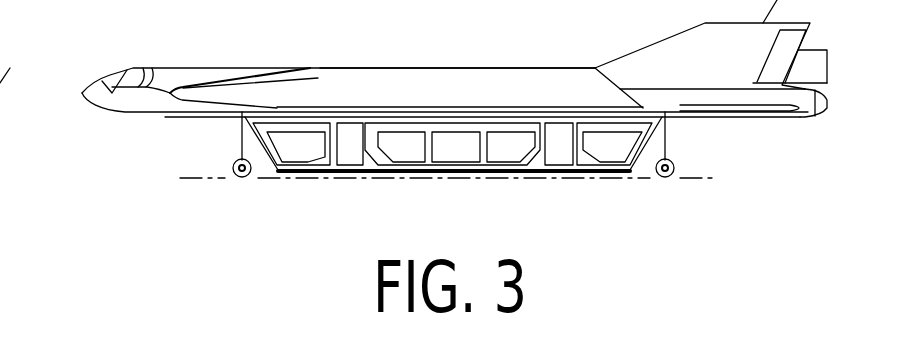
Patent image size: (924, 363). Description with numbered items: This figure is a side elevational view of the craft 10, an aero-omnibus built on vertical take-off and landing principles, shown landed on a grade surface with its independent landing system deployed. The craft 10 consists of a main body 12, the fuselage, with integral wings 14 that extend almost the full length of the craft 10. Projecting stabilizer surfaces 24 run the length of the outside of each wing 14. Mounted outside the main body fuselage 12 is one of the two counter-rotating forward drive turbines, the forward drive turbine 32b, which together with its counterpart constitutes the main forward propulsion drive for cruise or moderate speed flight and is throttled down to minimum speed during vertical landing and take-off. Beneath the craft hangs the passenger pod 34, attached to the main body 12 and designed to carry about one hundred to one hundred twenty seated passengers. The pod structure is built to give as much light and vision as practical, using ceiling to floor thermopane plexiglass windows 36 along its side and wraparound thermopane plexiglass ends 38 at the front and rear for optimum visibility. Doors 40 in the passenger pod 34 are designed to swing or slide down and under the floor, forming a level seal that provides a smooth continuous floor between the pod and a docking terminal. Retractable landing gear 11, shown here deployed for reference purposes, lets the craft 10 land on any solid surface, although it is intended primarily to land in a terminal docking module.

The craft 10 is at (142, 67).
The retractable landing gear 11 is at (238, 141).
The main body 12 is at (170, 78).
The integral wings 14 is at (197, 88).
The projecting stabilizer surfaces 24 is at (490, 68).
The forward drive turbine 32b is at (827, 50).
The passenger pod 34 is at (327, 163).
The ceiling to floor thermopane plexiglass windows 36 is at (408, 150).
The wraparound thermopane plexiglass ends 38 is at (610, 147).
The doors 40 is at (560, 153).